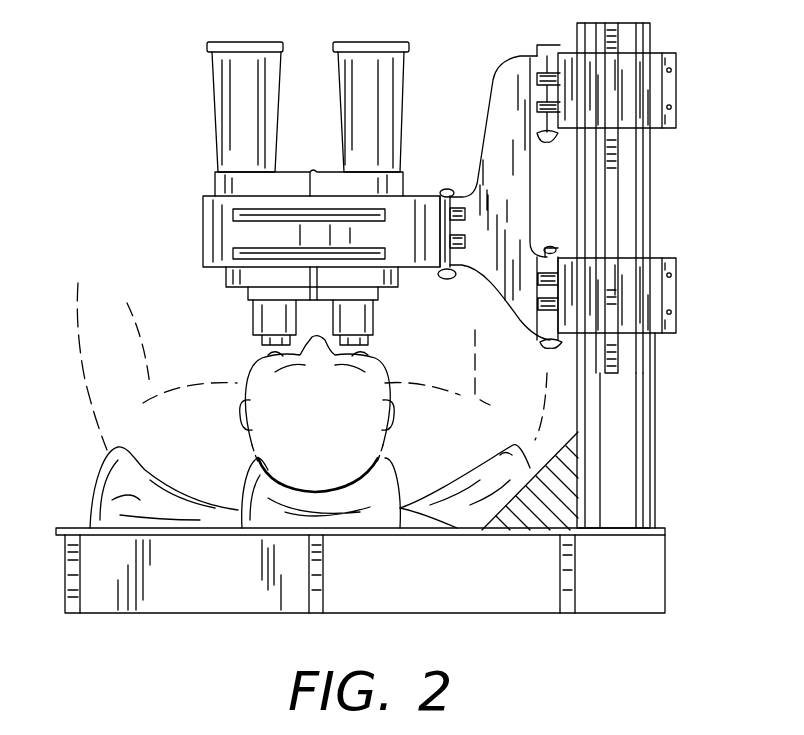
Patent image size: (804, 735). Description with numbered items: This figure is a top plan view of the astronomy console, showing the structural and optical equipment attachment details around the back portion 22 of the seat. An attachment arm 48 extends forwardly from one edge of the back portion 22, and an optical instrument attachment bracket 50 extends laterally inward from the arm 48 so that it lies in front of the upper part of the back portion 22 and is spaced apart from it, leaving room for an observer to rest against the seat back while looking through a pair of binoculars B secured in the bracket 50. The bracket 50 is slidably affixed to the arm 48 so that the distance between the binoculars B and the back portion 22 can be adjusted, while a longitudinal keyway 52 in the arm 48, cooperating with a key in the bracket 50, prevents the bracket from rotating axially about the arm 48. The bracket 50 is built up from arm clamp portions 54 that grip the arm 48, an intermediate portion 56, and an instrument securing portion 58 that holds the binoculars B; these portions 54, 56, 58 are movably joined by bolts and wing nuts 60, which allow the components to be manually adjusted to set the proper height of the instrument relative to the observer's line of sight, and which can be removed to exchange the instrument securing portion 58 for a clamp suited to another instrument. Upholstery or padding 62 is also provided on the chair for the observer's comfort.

The back portion 22 is at (193, 614).
The attachment arm 48 is at (654, 426).
The optical instrument attachment bracket 50 is at (493, 56).
The longitudinal keyway 52 is at (637, 204).
The arm clamp portions 54 is at (678, 97).
The intermediate portion 56 is at (488, 118).
The instrument securing portion 58 is at (203, 224).
The bolts and wing nuts 60 is at (540, 342).
The upholstery or padding 62 is at (90, 490).
The binoculars B is at (213, 108).